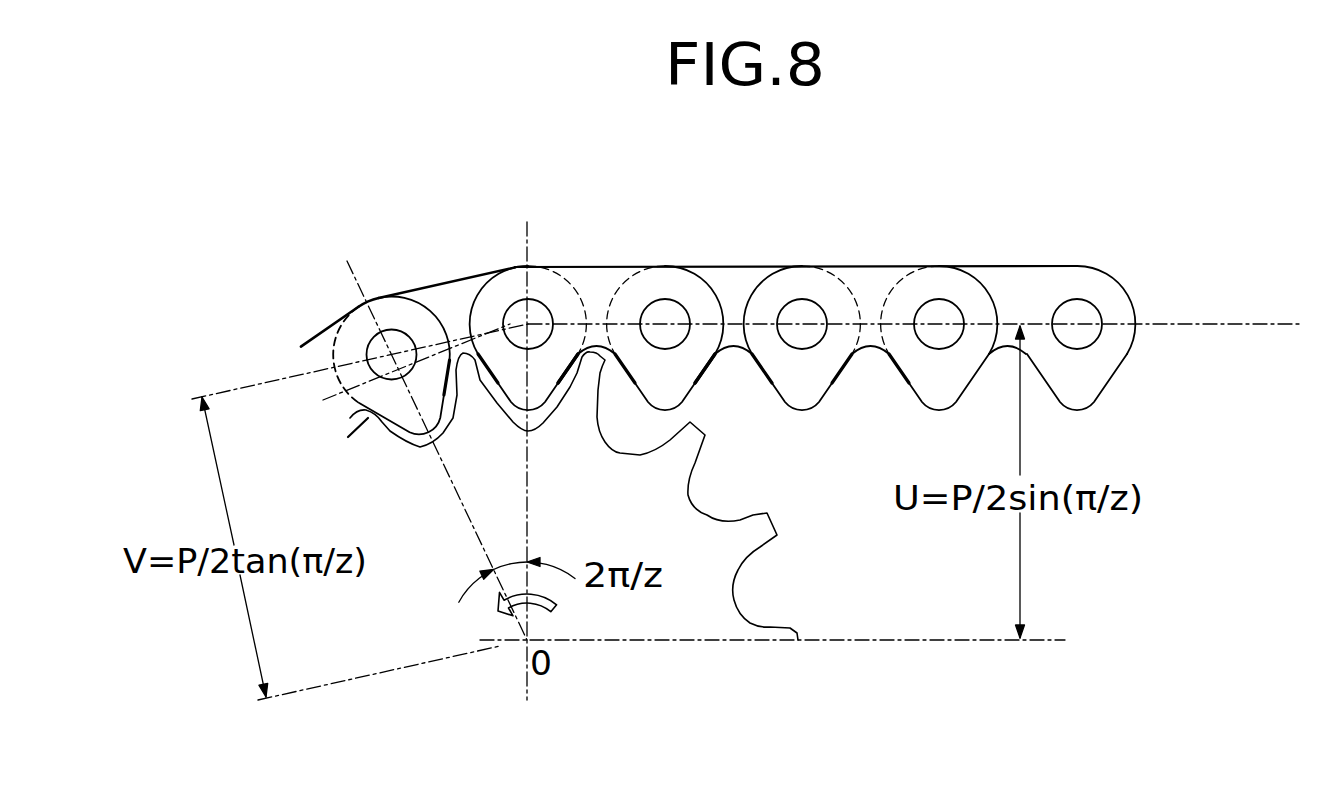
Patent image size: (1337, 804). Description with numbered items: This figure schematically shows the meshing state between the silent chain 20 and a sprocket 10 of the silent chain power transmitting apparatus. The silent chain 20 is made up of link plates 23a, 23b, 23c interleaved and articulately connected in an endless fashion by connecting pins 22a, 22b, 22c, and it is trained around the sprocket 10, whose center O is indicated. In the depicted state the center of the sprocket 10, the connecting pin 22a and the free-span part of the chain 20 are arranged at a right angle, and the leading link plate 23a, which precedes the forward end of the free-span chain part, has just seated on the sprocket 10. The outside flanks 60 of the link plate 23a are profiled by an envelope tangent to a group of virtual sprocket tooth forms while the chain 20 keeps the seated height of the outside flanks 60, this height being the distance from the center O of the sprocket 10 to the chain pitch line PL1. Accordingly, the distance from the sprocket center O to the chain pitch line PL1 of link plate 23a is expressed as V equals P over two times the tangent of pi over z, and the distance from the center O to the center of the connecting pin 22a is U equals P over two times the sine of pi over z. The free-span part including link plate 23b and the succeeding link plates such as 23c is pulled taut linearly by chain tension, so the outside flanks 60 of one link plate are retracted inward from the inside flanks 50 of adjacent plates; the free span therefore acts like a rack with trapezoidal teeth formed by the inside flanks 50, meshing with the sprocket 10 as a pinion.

The sprocket 10 is at (395, 504).
The silent chain 20 is at (962, 251).
The connecting pin 22a is at (518, 311).
The connecting pin 22b is at (667, 308).
The connecting pin 22c is at (802, 307).
The leading link plate 23a is at (445, 283).
The link plate 23b is at (600, 264).
The link plate 23c is at (738, 264).
The inside flank 50 is at (700, 373).
The outside flank 60 is at (574, 400).
The chain pitch line PL1 is at (1229, 322).